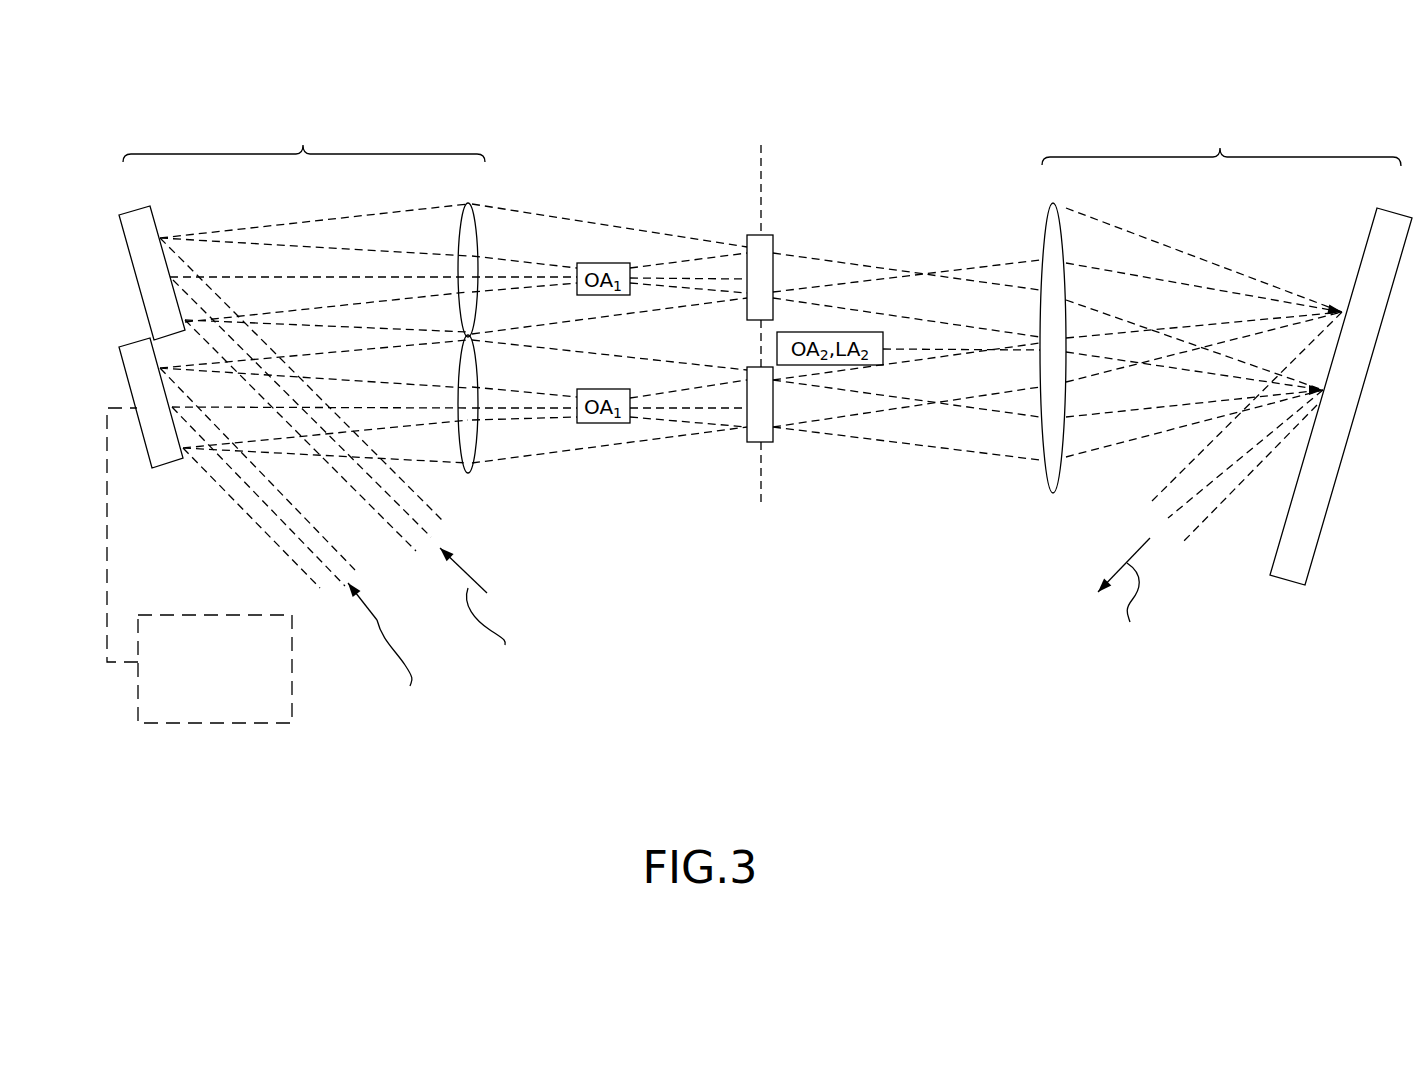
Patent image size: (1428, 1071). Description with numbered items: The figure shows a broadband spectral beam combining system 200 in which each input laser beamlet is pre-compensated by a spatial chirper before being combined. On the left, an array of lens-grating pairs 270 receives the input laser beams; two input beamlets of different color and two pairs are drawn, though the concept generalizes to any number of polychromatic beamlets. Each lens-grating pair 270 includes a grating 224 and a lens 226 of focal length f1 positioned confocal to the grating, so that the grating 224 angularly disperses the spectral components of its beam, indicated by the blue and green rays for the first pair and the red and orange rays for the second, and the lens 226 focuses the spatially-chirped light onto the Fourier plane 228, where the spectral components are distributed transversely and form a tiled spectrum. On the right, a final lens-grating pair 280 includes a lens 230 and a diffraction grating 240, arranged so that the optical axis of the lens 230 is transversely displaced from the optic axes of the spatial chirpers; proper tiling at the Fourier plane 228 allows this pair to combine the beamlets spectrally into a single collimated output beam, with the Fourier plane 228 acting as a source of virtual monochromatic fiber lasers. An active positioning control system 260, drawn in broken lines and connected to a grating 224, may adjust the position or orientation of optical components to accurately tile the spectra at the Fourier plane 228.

The broadband SBC system 200 is at (773, 781).
The grating (G1) 224 is at (152, 213).
The lens (f1) 226 is at (468, 203).
The Fourier plane 228 is at (775, 137).
The lens (f2) 230 is at (1053, 205).
The diffraction grating (G2) 240 is at (1377, 210).
The active positioning control subsystem 260 is at (197, 680).
The lens-grating pair 270 is at (401, 407).
The final lens-grating pair 280 is at (1206, 410).